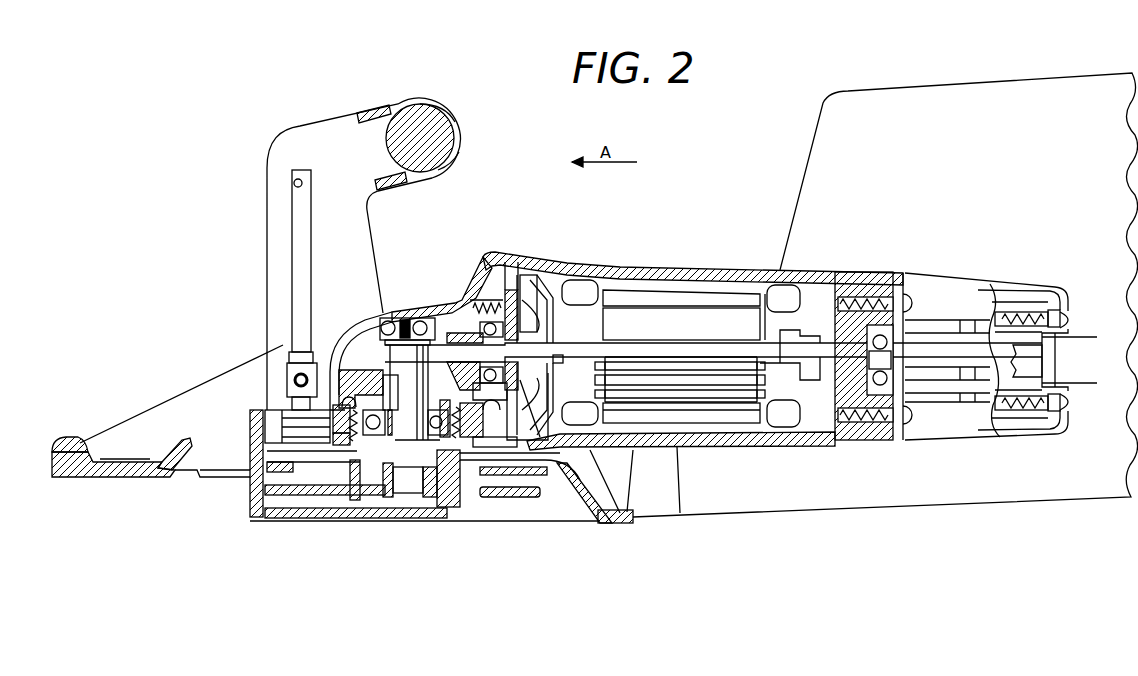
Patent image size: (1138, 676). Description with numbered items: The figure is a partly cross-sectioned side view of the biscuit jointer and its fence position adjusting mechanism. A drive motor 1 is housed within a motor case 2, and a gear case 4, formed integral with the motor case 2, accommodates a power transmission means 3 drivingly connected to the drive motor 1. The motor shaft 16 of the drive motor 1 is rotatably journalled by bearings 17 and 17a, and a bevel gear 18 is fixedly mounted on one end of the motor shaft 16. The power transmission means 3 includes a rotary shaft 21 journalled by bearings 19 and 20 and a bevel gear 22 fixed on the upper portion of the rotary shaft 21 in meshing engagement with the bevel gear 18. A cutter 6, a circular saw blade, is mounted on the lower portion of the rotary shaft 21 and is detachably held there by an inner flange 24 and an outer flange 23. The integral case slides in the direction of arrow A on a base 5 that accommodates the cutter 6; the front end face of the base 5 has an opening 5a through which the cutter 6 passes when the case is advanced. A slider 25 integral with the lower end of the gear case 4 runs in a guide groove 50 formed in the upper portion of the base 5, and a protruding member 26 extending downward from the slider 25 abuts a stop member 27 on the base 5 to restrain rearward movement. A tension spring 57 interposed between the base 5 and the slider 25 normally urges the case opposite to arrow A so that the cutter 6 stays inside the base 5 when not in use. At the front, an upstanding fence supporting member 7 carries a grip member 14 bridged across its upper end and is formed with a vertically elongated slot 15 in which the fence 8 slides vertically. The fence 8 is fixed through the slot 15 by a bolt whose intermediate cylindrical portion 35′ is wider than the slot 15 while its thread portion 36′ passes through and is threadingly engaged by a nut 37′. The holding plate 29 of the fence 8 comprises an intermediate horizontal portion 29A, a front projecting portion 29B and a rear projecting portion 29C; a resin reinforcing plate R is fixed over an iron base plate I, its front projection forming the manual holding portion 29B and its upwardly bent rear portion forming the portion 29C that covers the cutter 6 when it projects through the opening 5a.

The drive motor 1 is at (735, 300).
The motor case 2 is at (702, 270).
The power transmission means 3 is at (421, 305).
The gear case 4 is at (452, 308).
The base 5 is at (628, 522).
The opening 5a is at (252, 490).
The cutter 6 is at (528, 498).
The fence supporting member 7 is at (303, 129).
The fence 8 is at (179, 400).
The grip member 14 is at (418, 108).
The elongated slot 15 is at (296, 181).
The motor shaft 16 is at (787, 347).
The bearing 17 is at (843, 292).
The bearing 17a is at (495, 300).
The bevel gear 18 is at (464, 328).
The bearing 19 is at (387, 321).
The bearing 20 is at (340, 467).
The rotary shaft 21 is at (362, 340).
The bevel gear 22 is at (416, 451).
The outer flange 23 is at (443, 503).
The inner flange 24 is at (360, 497).
The slider 25 is at (323, 450).
The protruding member 26 is at (427, 480).
The stop member 27 is at (470, 473).
The holding plate 29 is at (118, 479).
The intermediate horizontal portion 29A is at (145, 479).
The front projecting portion 29B is at (72, 441).
The rear projecting portion 29C is at (180, 445).
The intermediate cylindrical portion 35′ is at (293, 354).
The thread portion 36′ is at (314, 375).
The nut 37′ is at (287, 381).
The guide groove 50 is at (278, 428).
The tension spring 57 is at (577, 481).
The iron base plate I is at (83, 480).
The resin reinforcing plate R is at (135, 461).